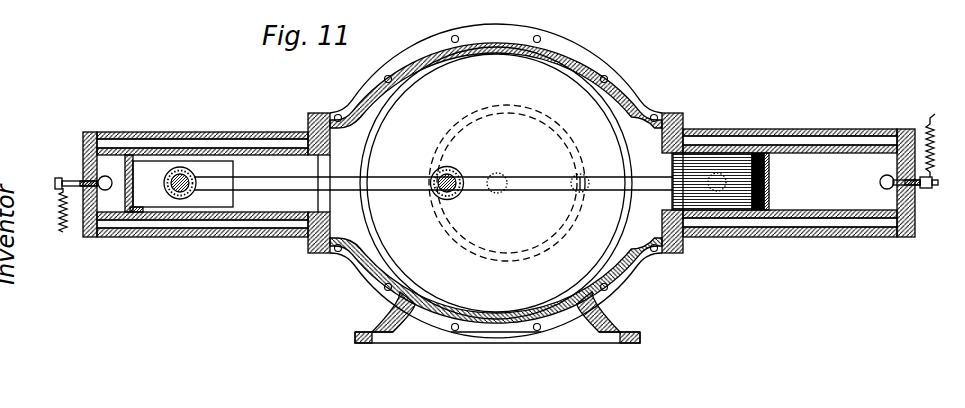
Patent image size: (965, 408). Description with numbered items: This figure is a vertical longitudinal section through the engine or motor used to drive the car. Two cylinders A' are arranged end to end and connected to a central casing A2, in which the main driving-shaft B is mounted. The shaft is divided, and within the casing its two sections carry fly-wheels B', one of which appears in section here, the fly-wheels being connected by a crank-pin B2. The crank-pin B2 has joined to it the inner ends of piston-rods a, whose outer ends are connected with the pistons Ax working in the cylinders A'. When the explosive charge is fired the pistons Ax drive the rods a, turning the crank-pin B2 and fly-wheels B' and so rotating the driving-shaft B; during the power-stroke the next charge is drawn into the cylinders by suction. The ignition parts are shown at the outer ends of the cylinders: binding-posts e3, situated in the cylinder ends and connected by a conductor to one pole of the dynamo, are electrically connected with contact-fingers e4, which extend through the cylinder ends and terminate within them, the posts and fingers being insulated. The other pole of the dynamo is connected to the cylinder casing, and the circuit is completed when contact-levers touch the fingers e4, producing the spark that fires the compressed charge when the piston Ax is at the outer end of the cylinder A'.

The cylinder A' is at (499, 162).
The central casing A2 is at (400, 51).
The piston Ax is at (463, 182).
The fly-wheel B' is at (496, 183).
The main driving-shaft B is at (497, 168).
The crank-pin B2 is at (455, 194).
The piston-rod a is at (433, 171).
The binding-post e3 is at (495, 173).
The contact-finger e4 is at (496, 195).